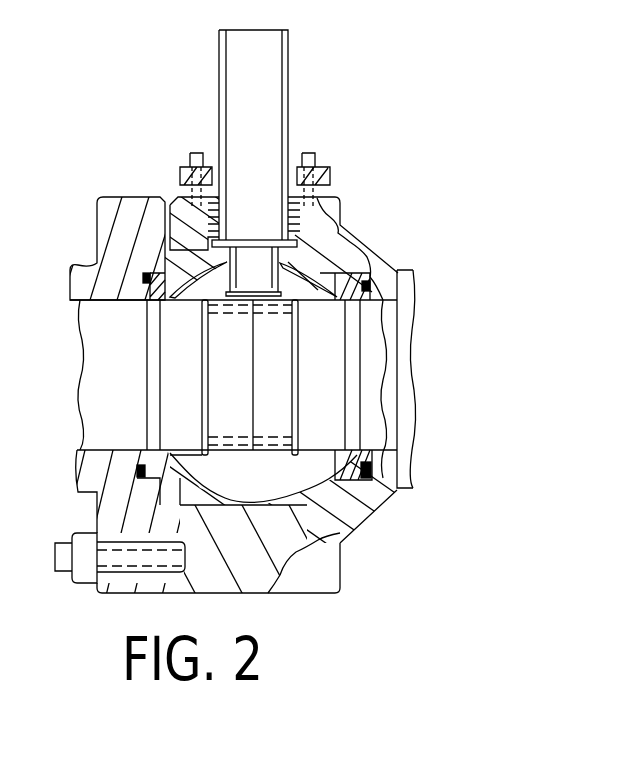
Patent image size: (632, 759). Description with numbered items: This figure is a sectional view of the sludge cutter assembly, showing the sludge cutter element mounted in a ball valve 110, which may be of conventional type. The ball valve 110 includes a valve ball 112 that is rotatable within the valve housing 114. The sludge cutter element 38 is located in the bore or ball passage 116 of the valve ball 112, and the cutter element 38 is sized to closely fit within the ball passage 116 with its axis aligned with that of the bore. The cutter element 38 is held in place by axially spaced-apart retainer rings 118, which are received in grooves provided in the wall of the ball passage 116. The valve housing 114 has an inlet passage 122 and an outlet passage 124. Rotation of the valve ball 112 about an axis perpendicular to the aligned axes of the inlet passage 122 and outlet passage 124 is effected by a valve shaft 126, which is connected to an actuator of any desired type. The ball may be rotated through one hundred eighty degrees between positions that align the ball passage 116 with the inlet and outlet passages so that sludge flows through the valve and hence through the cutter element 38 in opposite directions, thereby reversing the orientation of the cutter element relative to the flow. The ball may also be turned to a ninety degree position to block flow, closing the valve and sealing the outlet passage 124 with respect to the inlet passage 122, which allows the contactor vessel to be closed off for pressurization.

The ball valve 110 is at (378, 190).
The valve ball 112 is at (372, 519).
The valve housing 114 is at (302, 594).
The ball passage 116 is at (318, 305).
The retainer rings 118 is at (200, 428).
The inlet passage 122 is at (376, 442).
The outlet passage 124 is at (108, 448).
The valve shaft 126 is at (290, 50).
The sludge cutter element 38 is at (218, 333).